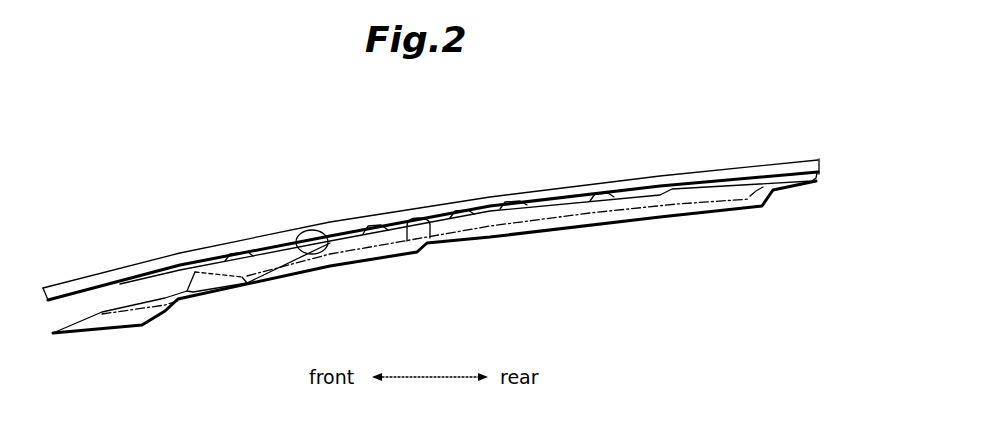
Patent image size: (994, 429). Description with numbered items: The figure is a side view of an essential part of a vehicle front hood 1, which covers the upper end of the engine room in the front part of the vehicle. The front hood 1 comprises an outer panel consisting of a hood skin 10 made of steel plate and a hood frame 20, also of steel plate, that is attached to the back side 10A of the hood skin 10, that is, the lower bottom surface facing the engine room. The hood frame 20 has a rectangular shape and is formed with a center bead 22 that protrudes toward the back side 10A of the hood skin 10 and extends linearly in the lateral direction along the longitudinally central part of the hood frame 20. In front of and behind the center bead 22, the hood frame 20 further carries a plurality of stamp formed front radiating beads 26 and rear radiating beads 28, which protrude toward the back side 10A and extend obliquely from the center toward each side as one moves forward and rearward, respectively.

The front hood 1 is at (673, 152).
The hood skin 10 is at (495, 197).
The back side of the hood skin 10A is at (323, 243).
The hood frame 20 is at (595, 225).
The center bead 22 is at (418, 226).
The front radiating beads 26 is at (283, 247).
The rear radiating beads 28 is at (560, 203).